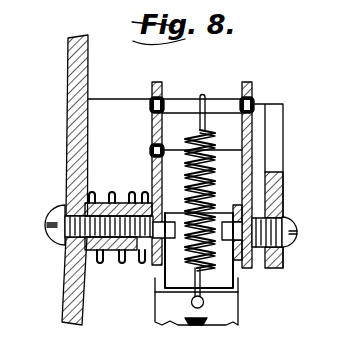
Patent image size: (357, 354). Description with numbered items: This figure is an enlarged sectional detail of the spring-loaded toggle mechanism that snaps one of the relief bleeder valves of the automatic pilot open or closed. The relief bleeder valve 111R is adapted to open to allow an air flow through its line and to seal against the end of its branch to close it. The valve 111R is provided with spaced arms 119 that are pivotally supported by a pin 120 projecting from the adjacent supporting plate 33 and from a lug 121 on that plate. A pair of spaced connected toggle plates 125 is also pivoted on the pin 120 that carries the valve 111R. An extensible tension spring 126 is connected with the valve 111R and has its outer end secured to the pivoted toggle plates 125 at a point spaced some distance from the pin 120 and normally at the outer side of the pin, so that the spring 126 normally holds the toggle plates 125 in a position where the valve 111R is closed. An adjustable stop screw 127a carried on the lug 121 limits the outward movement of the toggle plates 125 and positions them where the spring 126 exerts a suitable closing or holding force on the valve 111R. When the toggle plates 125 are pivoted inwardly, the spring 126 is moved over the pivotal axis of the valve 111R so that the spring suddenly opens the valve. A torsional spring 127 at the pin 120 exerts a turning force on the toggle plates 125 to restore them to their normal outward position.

The supporting plate 33 is at (70, 163).
The adjustable stop screw 127a is at (152, 150).
The torsional spring 127 is at (112, 192).
The toggle plate 125 is at (217, 141).
The extensible tension spring 126 is at (217, 164).
The lug 121 is at (272, 180).
The pin 120 is at (283, 220).
The arm 119 is at (237, 283).
The relief bleeder valve 111R is at (233, 310).